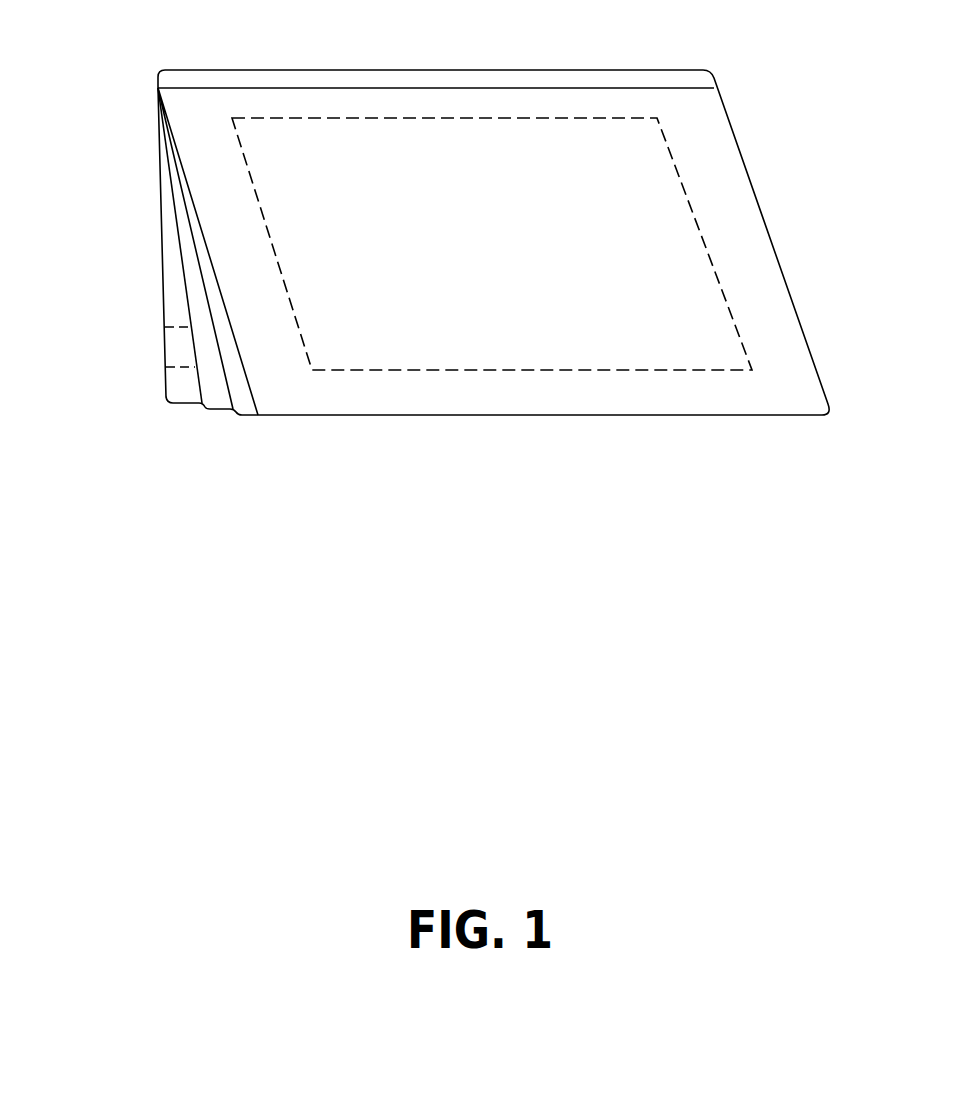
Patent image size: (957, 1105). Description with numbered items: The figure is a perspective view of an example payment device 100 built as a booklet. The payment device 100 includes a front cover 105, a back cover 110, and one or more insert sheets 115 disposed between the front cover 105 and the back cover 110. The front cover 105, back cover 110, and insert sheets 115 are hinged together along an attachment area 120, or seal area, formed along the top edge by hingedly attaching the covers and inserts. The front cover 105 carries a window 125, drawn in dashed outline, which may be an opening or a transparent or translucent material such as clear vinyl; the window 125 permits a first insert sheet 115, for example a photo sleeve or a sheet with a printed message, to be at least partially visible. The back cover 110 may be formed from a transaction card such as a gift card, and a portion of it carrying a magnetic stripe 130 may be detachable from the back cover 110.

The payment device 100 is at (217, 612).
The front cover 105 is at (785, 327).
The back cover 110 is at (182, 387).
The insert sheets 115 is at (220, 408).
The attachment area 120 is at (442, 83).
The window 125 is at (512, 338).
The magnetic stripe 130 is at (180, 345).